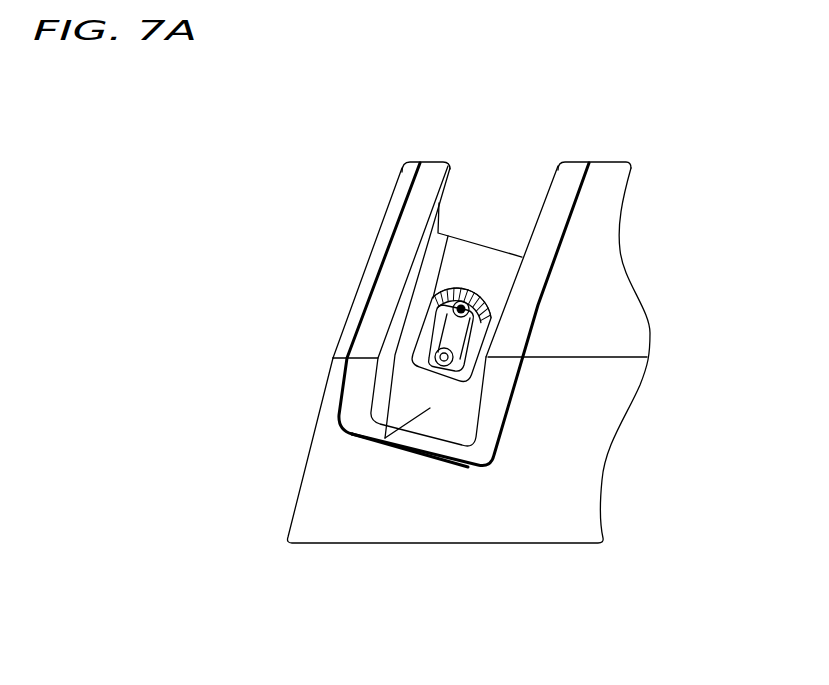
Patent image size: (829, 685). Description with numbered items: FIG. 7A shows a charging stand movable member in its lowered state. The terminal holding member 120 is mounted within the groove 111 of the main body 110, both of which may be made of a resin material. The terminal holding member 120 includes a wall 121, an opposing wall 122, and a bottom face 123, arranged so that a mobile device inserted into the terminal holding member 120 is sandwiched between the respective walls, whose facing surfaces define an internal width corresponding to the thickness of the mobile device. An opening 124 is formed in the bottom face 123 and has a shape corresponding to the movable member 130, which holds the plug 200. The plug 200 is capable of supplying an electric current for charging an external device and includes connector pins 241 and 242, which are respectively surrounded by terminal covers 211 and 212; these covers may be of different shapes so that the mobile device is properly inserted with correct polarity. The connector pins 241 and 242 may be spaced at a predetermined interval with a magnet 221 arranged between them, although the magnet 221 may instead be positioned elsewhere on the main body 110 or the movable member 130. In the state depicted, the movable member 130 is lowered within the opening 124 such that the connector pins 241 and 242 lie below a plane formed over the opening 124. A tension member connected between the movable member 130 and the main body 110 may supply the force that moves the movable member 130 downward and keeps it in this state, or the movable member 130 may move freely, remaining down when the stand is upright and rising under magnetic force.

The main body 110 is at (553, 529).
The groove 111 is at (415, 458).
The terminal holding member 120 is at (352, 400).
The wall 121 is at (542, 203).
The wall 122 is at (457, 166).
The bottom face 123 is at (472, 257).
The opening 124 is at (457, 292).
The movable member 130 is at (385, 440).
The plug 200 is at (473, 343).
The terminal cover 211 is at (453, 332).
The terminal cover 212 is at (437, 357).
The magnet 221 is at (452, 315).
The connector pin 241 is at (466, 311).
The connector pin 242 is at (387, 438).